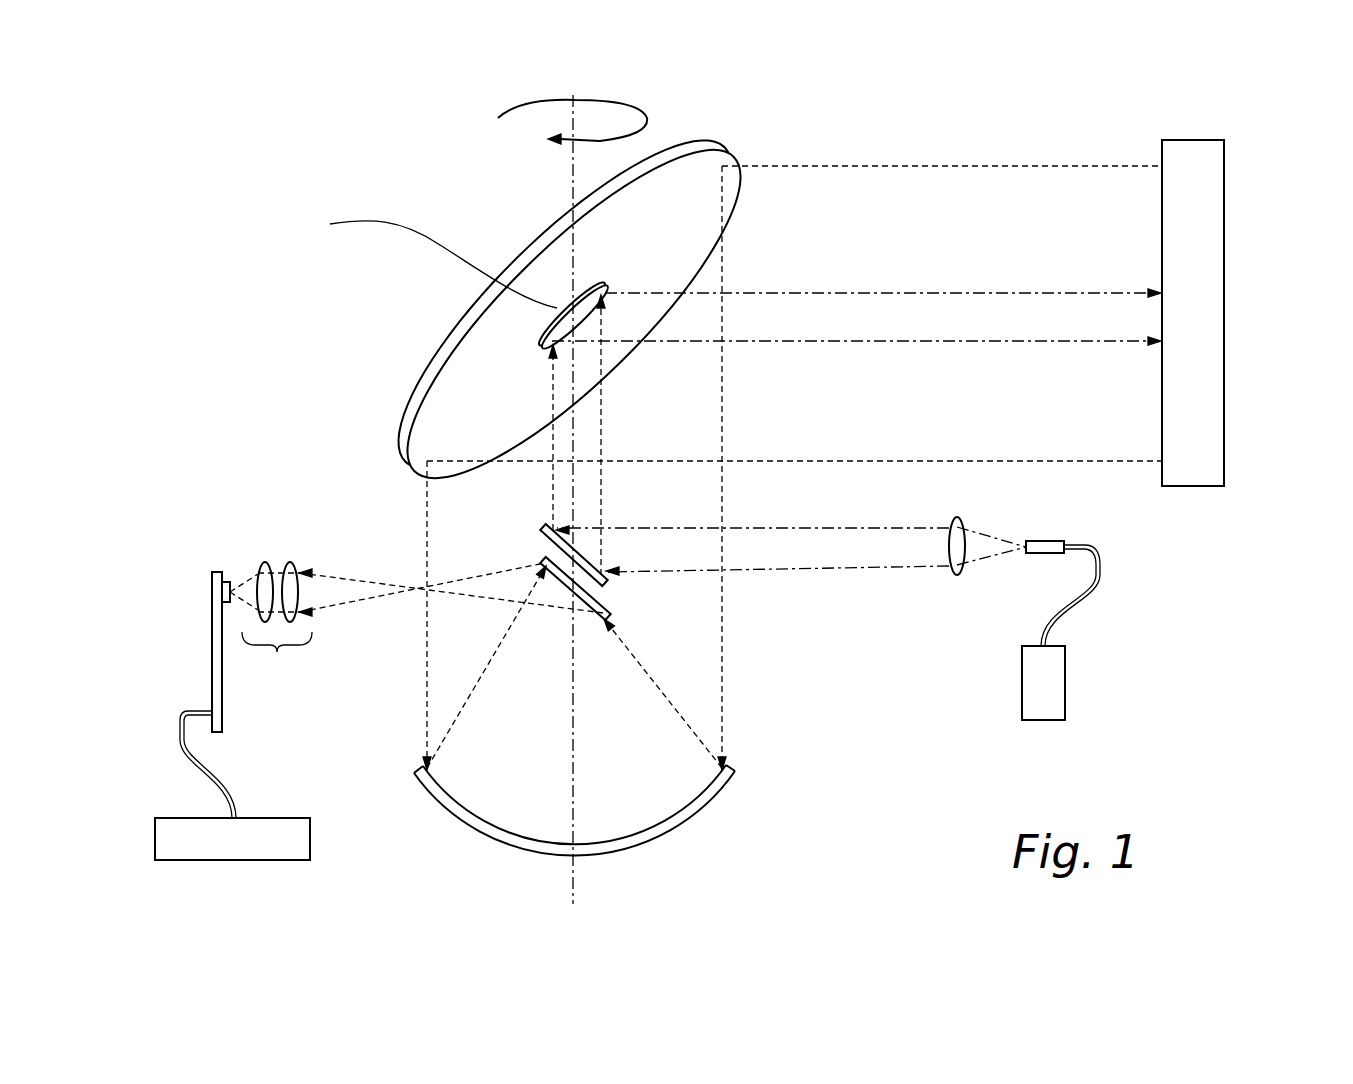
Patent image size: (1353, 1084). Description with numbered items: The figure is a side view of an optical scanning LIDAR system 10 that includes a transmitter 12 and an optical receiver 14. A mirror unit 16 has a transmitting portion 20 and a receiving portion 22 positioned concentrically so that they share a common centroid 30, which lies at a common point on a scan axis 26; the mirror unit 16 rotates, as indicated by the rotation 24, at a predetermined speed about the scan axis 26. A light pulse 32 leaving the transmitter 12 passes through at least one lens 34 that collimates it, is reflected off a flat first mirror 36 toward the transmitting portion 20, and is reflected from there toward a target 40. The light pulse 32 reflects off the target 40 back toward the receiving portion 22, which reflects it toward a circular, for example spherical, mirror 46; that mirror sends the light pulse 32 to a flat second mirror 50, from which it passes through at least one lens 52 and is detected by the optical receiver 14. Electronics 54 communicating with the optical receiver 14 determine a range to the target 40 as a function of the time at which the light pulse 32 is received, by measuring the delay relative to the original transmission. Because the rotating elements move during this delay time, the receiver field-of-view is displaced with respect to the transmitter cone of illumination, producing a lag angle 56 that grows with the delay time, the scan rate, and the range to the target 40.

The optical scanning LIDAR system 10 is at (205, 268).
The transmitter 12 is at (1066, 672).
The optical receiver 14 is at (212, 655).
The mirror unit 16 is at (405, 392).
The transmitting portion 20 is at (560, 332).
The receiving portion 22 is at (558, 279).
The rotation 24 is at (633, 105).
The scan axis 26 is at (576, 885).
The common centroid 30 is at (560, 318).
The light pulse 32 is at (990, 535).
The lens 34 is at (955, 578).
The first mirror 36 is at (542, 538).
The target 40 is at (1224, 337).
The circular mirror 46 is at (480, 833).
The second mirror 50 is at (598, 604).
The lens 52 is at (277, 623).
The electronics 54 is at (220, 860).
The lag angle 56 is at (608, 286).